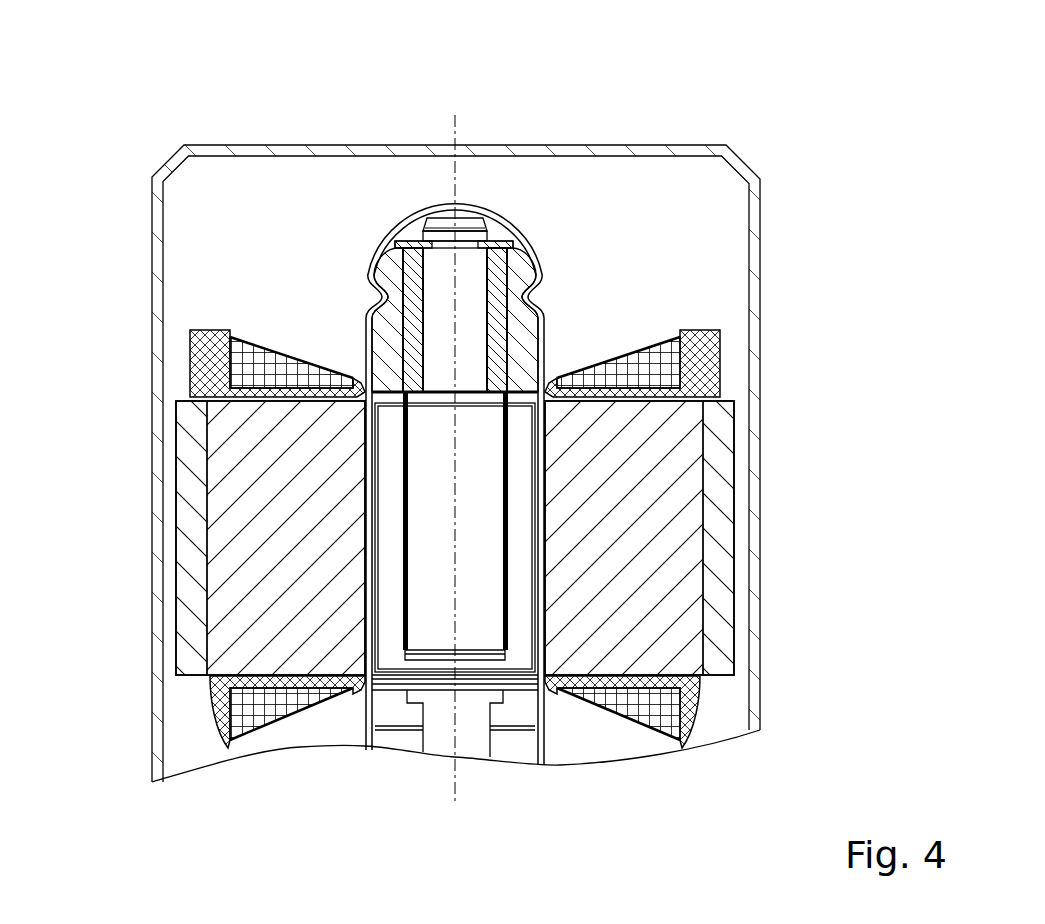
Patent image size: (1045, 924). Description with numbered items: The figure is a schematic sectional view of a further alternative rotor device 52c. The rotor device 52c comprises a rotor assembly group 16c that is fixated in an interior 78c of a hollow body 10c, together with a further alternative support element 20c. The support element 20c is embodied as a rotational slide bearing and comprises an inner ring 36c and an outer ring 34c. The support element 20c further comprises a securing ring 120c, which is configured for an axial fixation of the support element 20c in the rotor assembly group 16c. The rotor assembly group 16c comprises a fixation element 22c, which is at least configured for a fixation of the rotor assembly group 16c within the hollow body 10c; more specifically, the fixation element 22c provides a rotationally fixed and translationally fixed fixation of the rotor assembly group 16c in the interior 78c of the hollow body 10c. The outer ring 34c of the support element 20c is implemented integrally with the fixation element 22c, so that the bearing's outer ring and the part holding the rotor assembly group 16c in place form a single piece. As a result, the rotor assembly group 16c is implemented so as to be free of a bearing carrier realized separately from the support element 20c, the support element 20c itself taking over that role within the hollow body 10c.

The hollow body 10c is at (407, 166).
The rotor assembly group 16c is at (550, 545).
The support element 20c is at (382, 275).
The fixation element 22c is at (382, 322).
The outer ring 34c is at (388, 266).
The inner ring 36c is at (566, 300).
The rotor device 52c is at (505, 340).
The interior 78c is at (475, 200).
The securing ring 120c is at (499, 243).